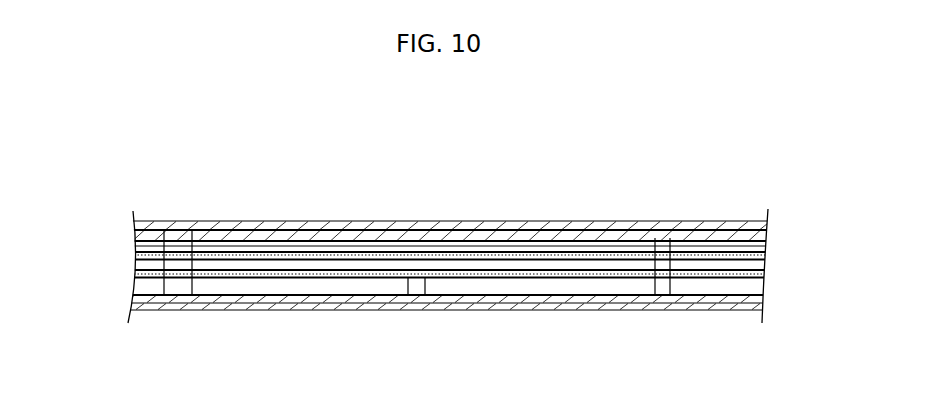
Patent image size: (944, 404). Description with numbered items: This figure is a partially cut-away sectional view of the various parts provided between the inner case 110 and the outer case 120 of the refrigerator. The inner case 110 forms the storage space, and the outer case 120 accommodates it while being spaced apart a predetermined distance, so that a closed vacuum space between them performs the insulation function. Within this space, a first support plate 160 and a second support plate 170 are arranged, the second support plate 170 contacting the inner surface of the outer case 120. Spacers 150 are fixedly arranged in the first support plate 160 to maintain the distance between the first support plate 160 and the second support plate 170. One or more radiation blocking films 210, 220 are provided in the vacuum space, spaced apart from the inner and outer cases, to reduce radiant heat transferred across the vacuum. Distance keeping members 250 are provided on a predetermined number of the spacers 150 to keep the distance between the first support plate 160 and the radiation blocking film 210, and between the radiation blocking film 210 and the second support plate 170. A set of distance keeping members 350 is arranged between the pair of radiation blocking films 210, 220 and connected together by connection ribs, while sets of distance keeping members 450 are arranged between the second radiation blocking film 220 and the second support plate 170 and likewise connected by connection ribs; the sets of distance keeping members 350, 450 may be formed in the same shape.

The inner case 110 is at (265, 307).
The outer case 120 is at (527, 225).
The spacer 150 is at (417, 290).
The first support plate 160 is at (131, 300).
The second support plate 170 is at (128, 235).
The radiation blocking film 210 is at (755, 280).
The second radiation blocking film 220 is at (755, 253).
The distance keeping member 250 is at (665, 287).
The distance keeping member set 350 is at (665, 265).
The distance keeping member set 450 is at (665, 245).